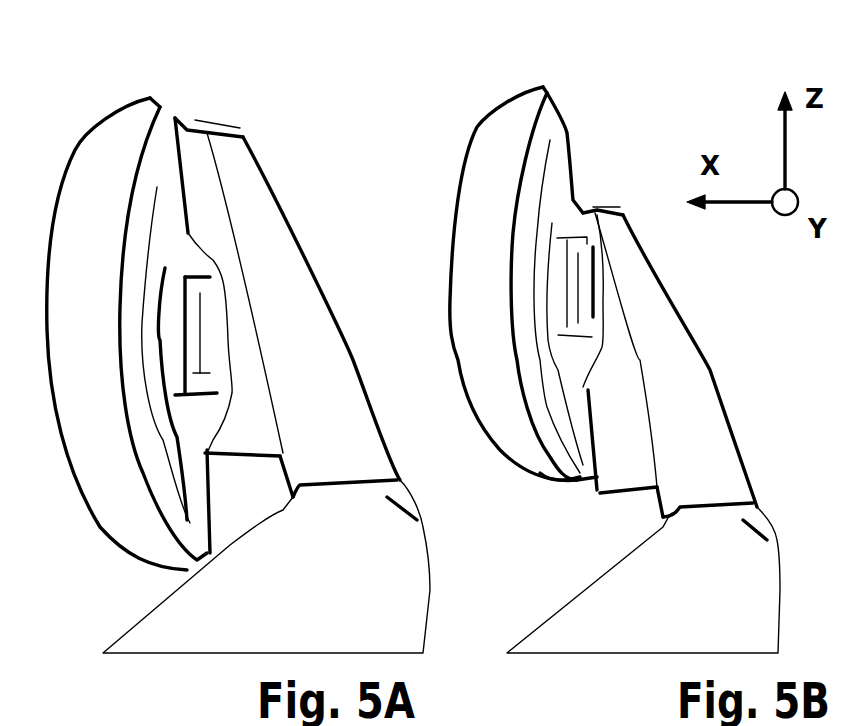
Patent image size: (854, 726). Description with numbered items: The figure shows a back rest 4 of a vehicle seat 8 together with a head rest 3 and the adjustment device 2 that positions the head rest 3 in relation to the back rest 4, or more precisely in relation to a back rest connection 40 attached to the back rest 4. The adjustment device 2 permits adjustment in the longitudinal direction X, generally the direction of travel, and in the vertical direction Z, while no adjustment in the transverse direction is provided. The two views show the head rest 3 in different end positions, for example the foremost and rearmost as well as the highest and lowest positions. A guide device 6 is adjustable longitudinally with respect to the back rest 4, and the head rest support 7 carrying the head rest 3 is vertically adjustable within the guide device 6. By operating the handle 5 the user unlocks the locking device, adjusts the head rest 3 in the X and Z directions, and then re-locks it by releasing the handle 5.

In FIG. 5A, the adjustment device 2 is at (307, 267).
In FIG. 5B, the adjustment device 2 is at (693, 340).
In FIG. 5A, the head rest 3 is at (80, 160).
In FIG. 5B, the head rest 3 is at (480, 143).
In FIG. 5A, the back rest 4 is at (197, 637).
In FIG. 5B, the back rest 4 is at (770, 630).
In FIG. 5A, the handle 5 is at (200, 373).
In FIG. 5B, the handle 5 is at (590, 290).
In FIG. 5A, the guide device 6 is at (205, 125).
In FIG. 5B, the guide device 6 is at (600, 497).
In FIG. 5A, the head rest support 7 is at (165, 120).
In FIG. 5B, the head rest support 7 is at (552, 100).
In FIG. 5B, the vehicle seat 8 is at (677, 62).
In FIG. 5A, the back rest connection 40 is at (397, 487).
In FIG. 5B, the back rest connection 40 is at (760, 517).